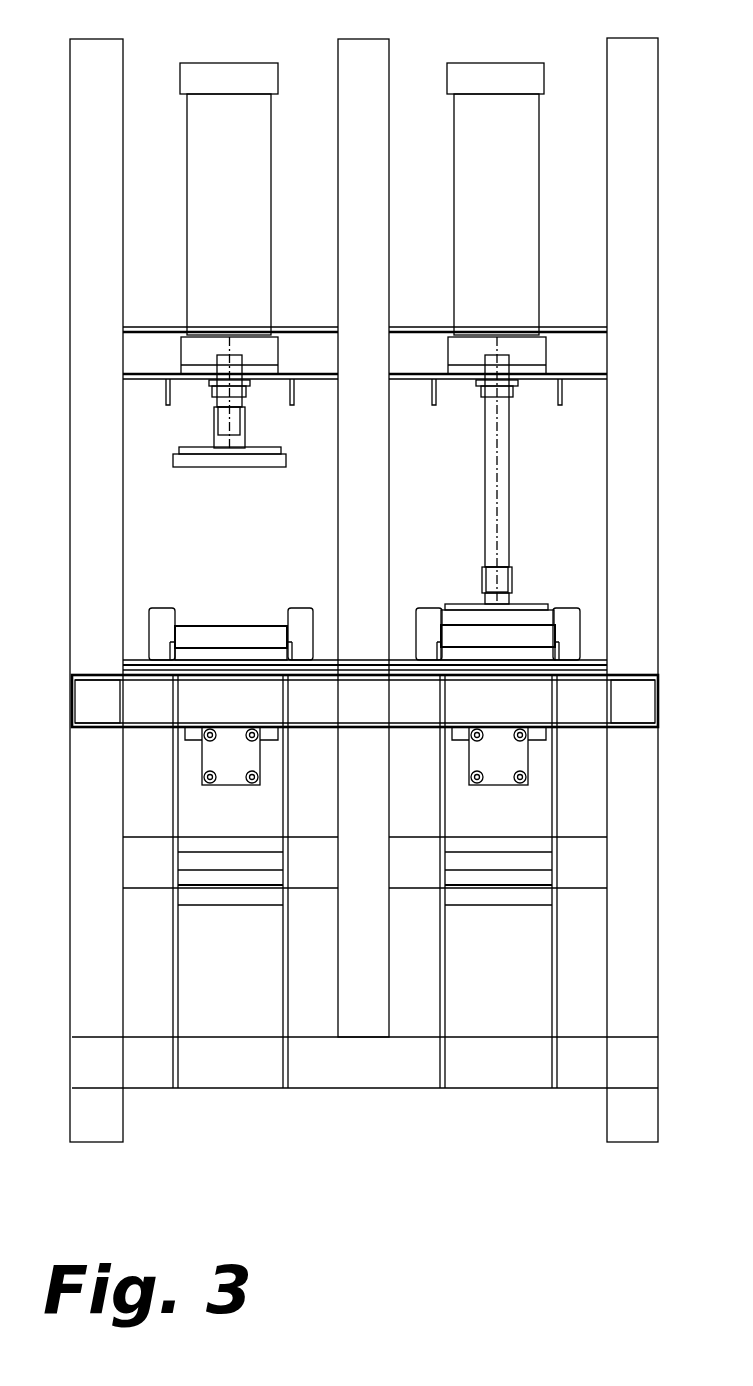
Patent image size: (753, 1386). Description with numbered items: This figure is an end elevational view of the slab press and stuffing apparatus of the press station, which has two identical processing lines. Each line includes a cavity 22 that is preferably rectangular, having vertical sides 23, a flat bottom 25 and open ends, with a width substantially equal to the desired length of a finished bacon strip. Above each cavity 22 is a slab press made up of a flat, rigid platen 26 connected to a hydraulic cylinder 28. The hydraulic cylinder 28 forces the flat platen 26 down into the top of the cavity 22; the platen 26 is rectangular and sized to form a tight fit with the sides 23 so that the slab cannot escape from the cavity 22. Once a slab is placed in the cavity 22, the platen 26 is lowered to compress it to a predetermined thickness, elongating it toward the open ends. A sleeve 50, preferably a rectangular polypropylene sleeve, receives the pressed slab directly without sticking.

The cavity 22 is at (207, 612).
The vertical sides 23 is at (163, 608).
The flat bottom 25 is at (237, 647).
The flat platen 26 is at (212, 468).
The hydraulic cylinder 28 is at (271, 138).
The sleeve 50 is at (270, 612).